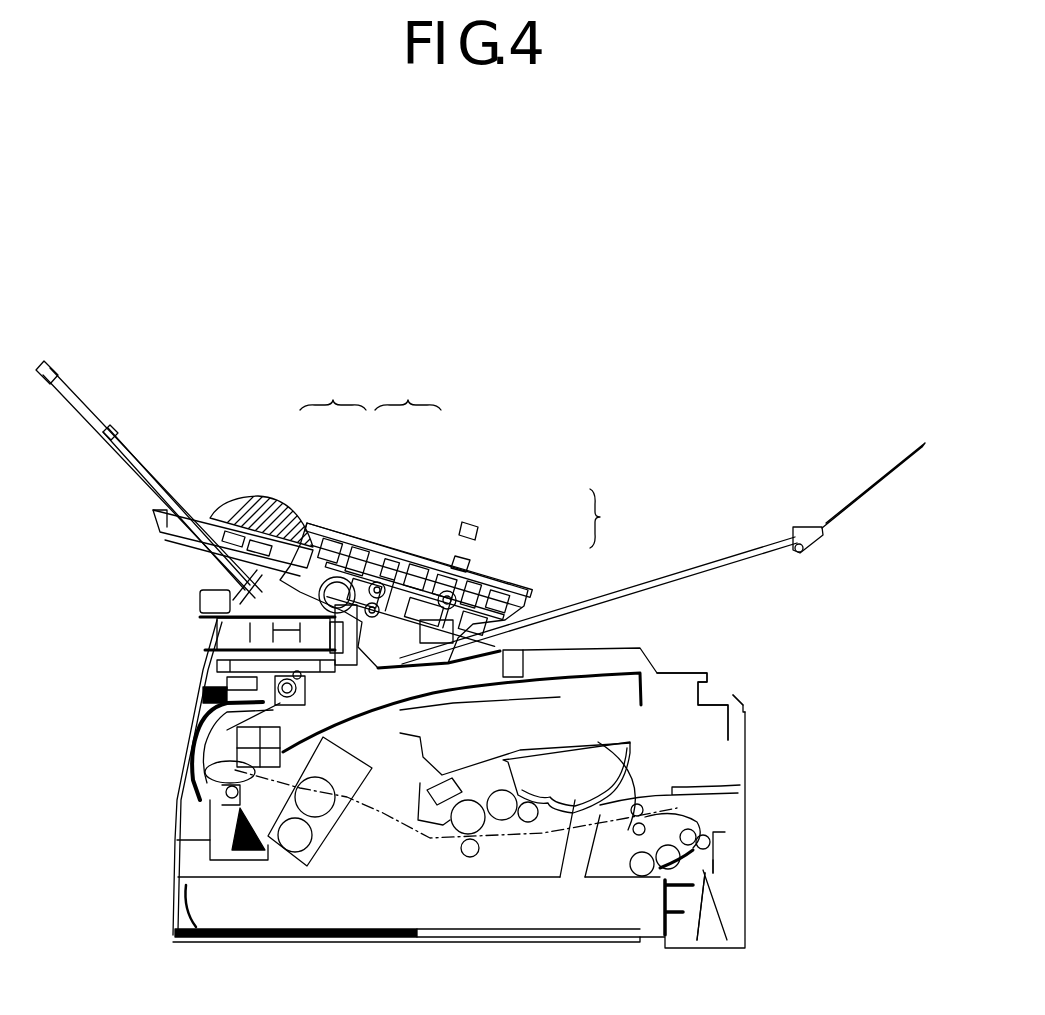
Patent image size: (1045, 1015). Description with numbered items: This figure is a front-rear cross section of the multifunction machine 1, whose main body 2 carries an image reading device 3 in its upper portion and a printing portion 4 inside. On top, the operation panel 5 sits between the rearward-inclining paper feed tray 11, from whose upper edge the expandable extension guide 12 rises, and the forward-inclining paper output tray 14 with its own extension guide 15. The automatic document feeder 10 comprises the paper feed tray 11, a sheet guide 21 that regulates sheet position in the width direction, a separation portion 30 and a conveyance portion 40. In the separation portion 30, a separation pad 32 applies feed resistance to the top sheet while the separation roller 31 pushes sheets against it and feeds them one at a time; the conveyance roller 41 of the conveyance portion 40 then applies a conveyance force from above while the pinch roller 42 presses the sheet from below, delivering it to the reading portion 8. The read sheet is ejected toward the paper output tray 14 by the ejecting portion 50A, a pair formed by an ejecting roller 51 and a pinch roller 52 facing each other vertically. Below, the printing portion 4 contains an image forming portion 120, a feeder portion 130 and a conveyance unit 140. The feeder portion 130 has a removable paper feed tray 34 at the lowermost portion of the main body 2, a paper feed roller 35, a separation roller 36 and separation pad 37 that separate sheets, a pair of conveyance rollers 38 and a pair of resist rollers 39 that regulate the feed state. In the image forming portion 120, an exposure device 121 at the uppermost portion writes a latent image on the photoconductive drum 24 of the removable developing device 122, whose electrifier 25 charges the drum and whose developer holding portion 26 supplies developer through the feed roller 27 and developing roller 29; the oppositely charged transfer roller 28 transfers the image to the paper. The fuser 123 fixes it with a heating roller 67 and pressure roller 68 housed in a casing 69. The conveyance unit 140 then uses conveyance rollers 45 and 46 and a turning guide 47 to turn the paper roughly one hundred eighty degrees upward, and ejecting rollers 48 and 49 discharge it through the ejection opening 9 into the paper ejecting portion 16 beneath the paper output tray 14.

The multifunction machine 1 is at (452, 249).
The main body 2 is at (145, 846).
The image reading device 3 is at (577, 435).
The printing portion 4 is at (692, 748).
The operation panel 5 is at (413, 520).
The reading portion 8 is at (470, 520).
The ejection opening 9 is at (300, 680).
The automatic document feeder 10 is at (298, 440).
The paper feed tray 11 is at (177, 464).
The extension guide 12 is at (68, 374).
The paper output tray 14 is at (784, 514).
The extension guide 15 is at (887, 447).
The paper ejecting portion 16 is at (555, 665).
The sheet guide 21 is at (265, 470).
The photoconductive drum 24 is at (470, 848).
The electrifier 25 is at (468, 817).
The developer holding portion 26 is at (627, 777).
The feed roller 27 is at (590, 790).
The transfer roller 28 is at (502, 805).
The developing roller 29 is at (528, 812).
The separation portion 30 is at (333, 392).
The separation roller 31 is at (322, 520).
The separation pad 32 is at (345, 520).
The paper feed tray 34 is at (173, 923).
The paper feed roller 35 is at (642, 864).
The separation roller 36 is at (668, 857).
The separation pad 37 is at (722, 870).
The pair of conveyance rollers 38 is at (703, 832).
The pair of resist rollers 39 is at (680, 797).
The conveyance portion 40 is at (408, 392).
The conveyance roller 41 is at (383, 520).
The pinch roller 42 is at (410, 520).
The conveyance roller 45 is at (224, 797).
The conveyance roller 46 is at (205, 770).
The turning guide 47 is at (192, 722).
The ejecting roller 48 is at (262, 672).
The ejecting roller 49 is at (300, 693).
The ejecting portion 50A is at (611, 518).
The ejecting roller 51 is at (463, 560).
The pinch roller 52 is at (440, 613).
The heating roller 67 is at (315, 797).
The pressure roller 68 is at (295, 835).
The casing 69 is at (345, 805).
The image forming portion 120 is at (675, 697).
The exposure device 121 is at (593, 712).
The developing device 122 is at (660, 708).
The fuser 123 is at (366, 724).
The feeder portion 130 is at (747, 864).
The conveyance unit 140 is at (160, 728).